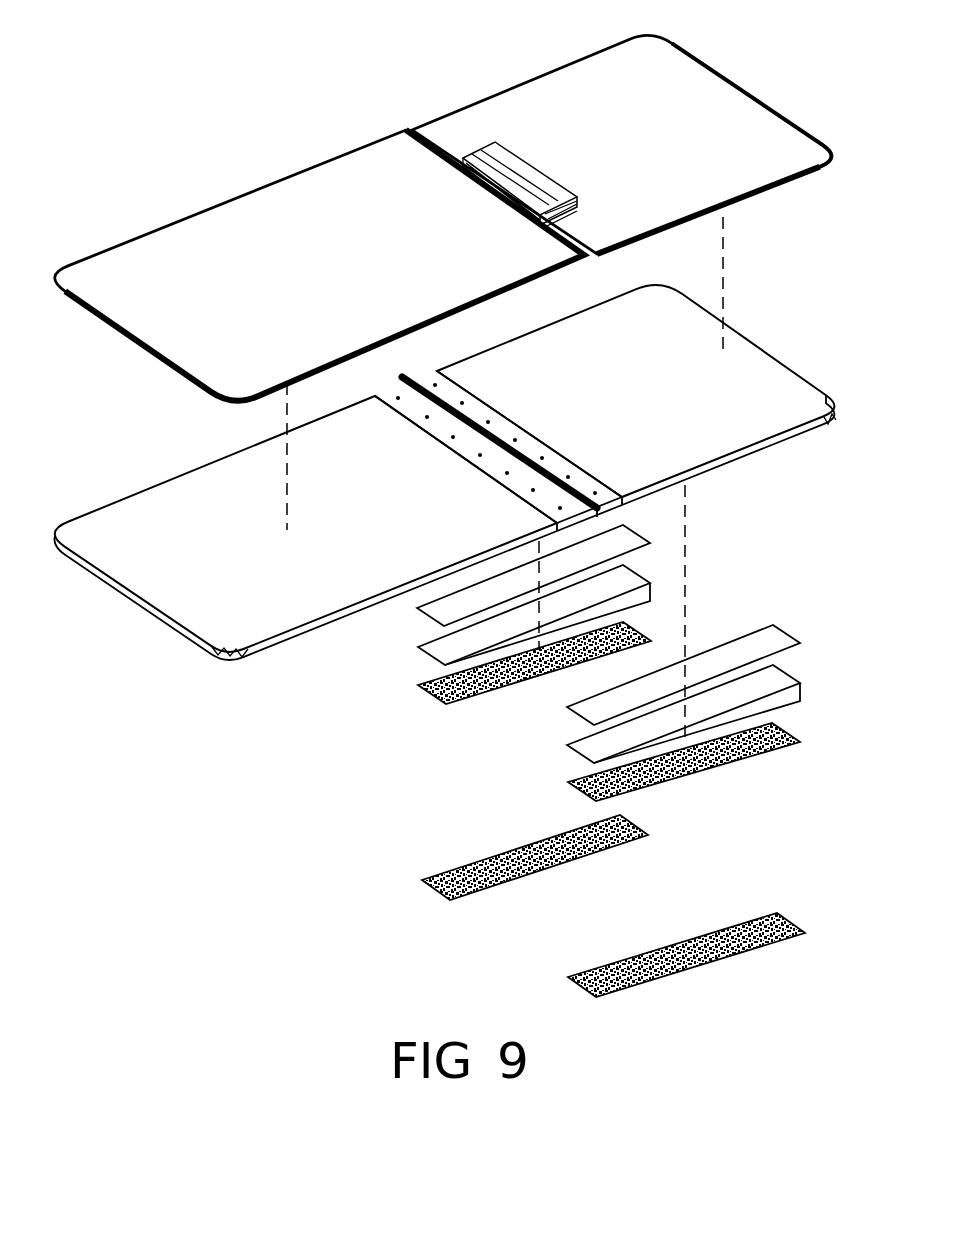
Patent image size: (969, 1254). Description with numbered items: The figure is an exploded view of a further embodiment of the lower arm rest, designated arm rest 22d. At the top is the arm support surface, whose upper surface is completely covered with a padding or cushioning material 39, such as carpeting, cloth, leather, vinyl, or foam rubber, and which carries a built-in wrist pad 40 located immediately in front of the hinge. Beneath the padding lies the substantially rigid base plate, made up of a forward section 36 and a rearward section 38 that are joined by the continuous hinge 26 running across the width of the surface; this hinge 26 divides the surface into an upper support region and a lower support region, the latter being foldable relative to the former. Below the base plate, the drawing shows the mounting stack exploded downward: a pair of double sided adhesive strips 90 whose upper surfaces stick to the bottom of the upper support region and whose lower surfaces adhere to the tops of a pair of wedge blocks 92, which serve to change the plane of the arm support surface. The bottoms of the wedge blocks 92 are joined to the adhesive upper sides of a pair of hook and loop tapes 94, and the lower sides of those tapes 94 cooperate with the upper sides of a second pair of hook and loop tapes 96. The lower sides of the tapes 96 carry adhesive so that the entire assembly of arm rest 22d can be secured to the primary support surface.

The arm rest 22d is at (117, 432).
The padding or cushioning material 39 is at (483, 120).
The wrist pad 40 is at (518, 167).
The hinge 26 is at (533, 455).
The forward section 36 is at (742, 423).
The rearward section 38 is at (277, 607).
The double sided adhesive strips 90 is at (412, 618).
The wedge blocks 92 is at (575, 758).
The hook and loop tapes 94 is at (643, 635).
The hook and loop tapes 96 is at (793, 922).